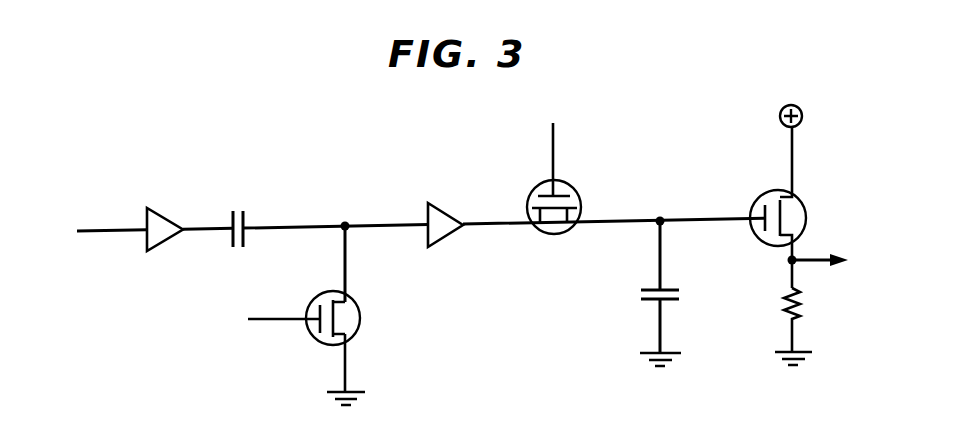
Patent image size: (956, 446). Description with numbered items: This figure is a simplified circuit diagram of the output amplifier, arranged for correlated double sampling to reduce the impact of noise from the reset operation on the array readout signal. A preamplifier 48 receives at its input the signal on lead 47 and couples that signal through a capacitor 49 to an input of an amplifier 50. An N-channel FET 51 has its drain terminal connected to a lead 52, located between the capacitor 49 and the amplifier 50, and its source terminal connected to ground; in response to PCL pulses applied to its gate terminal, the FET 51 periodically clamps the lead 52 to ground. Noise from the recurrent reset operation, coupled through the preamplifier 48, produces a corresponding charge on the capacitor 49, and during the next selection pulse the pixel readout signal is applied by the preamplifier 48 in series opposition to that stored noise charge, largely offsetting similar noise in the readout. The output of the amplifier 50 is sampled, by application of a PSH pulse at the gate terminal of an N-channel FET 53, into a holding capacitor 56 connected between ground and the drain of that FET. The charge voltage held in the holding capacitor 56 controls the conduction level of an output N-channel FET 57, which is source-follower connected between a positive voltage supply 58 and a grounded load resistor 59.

The lead 47 is at (100, 231).
The preamplifier 48 is at (168, 216).
The capacitor 49 is at (245, 212).
The amplifier 50 is at (446, 206).
The N-channel FET 51 is at (358, 303).
The lead 52 is at (374, 225).
The N-channel FET 53 is at (578, 196).
The holding capacitor 56 is at (666, 290).
The output N-channel FET 57 is at (762, 197).
The positive voltage supply 58 is at (780, 114).
The load resistor 59 is at (783, 306).